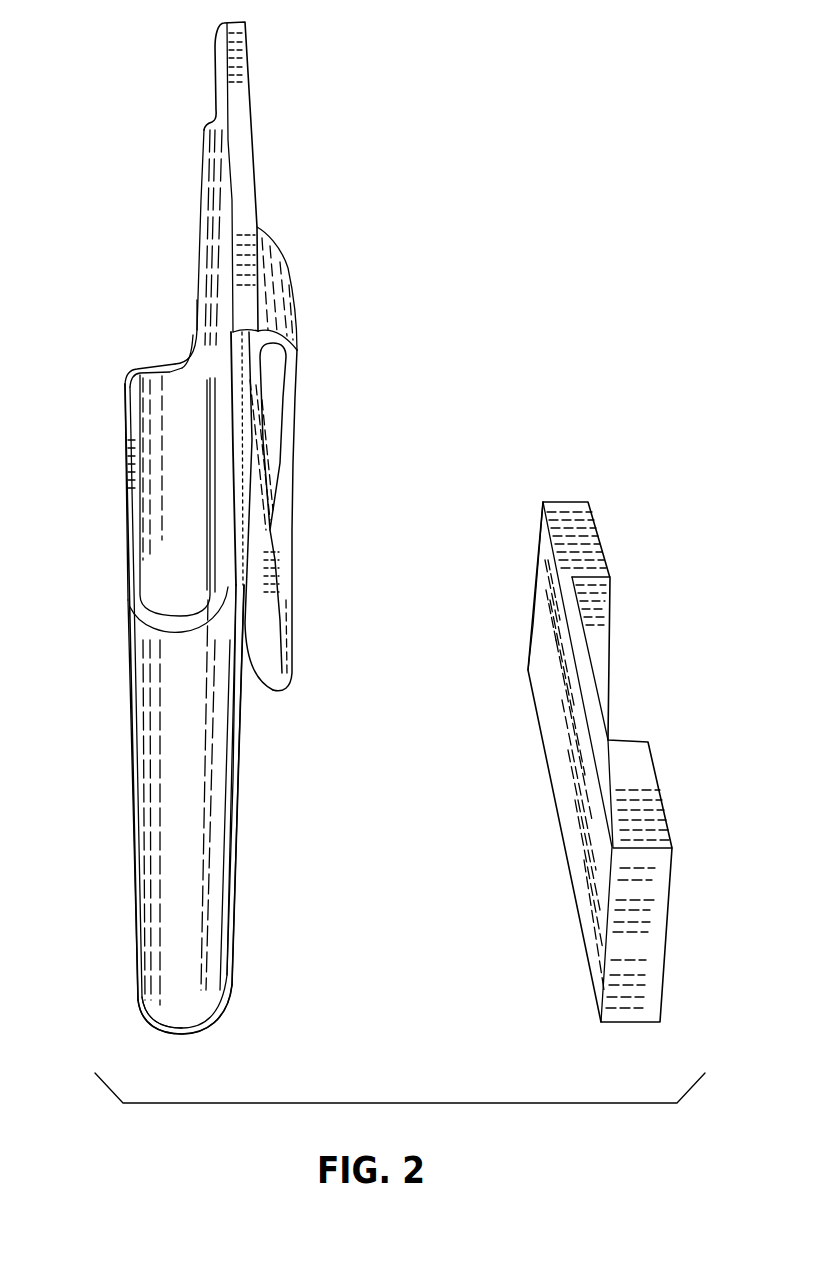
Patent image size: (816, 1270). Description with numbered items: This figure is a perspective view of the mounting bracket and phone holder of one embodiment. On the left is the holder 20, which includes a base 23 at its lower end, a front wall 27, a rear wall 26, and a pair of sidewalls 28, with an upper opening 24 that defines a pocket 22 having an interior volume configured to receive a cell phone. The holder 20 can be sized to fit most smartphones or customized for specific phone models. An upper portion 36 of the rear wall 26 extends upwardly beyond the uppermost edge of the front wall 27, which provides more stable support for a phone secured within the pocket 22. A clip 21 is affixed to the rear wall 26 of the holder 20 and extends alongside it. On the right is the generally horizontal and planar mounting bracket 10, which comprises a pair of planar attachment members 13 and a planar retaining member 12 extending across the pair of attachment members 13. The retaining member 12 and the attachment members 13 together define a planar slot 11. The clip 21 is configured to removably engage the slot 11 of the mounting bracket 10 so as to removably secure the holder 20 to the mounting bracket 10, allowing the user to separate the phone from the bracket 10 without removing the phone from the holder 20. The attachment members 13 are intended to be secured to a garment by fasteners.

The mounting bracket 10 is at (575, 850).
The planar slot 11 is at (603, 700).
The retaining member 12 is at (555, 612).
The attachment members 13 is at (597, 530).
The holder 20 is at (150, 800).
The clip 21 is at (287, 460).
The pocket 22 is at (177, 380).
The base 23 is at (218, 1023).
The upper opening 24 is at (130, 410).
The rear wall 26 is at (238, 798).
The front wall 27 is at (130, 740).
The sidewalls 28 is at (177, 978).
The upper portion 36 is at (257, 200).